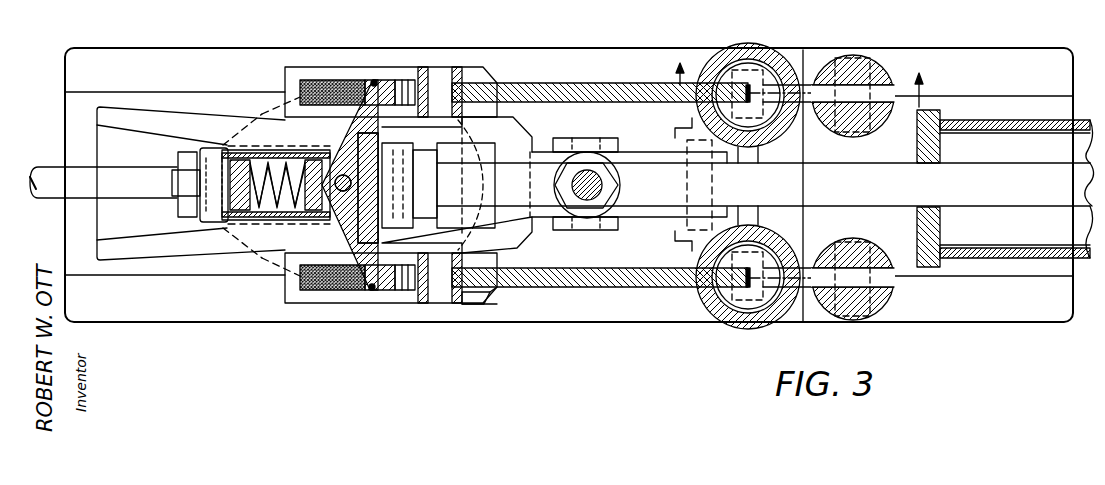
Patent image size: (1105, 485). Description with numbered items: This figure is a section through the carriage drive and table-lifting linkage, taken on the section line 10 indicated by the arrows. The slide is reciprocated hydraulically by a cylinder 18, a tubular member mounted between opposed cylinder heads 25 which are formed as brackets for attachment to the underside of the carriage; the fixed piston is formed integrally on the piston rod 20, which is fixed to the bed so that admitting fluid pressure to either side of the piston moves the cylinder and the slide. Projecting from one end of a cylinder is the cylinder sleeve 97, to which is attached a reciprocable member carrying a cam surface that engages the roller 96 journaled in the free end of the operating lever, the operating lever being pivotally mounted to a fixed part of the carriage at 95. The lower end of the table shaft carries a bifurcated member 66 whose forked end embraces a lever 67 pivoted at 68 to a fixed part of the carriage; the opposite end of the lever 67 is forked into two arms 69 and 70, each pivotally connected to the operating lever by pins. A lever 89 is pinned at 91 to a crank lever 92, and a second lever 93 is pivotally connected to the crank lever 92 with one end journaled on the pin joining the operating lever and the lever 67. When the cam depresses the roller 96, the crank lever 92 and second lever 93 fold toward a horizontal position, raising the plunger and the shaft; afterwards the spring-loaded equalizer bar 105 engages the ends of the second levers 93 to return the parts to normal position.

The section line 10 is at (790, 81).
The cylinder 18 is at (1025, 252).
The piston rod 20 is at (133, 152).
The cylinder head 25 is at (932, 268).
The bifurcated member 66 is at (608, 138).
The lever 67 is at (660, 220).
The pivot 68 is at (675, 138).
The arm 69 is at (517, 113).
The arm 70 is at (488, 297).
The lever 89 is at (620, 68).
The pin 91 is at (437, 77).
The crank lever 92 is at (468, 306).
The second lever 93 is at (388, 292).
The pivot 95 is at (428, 235).
The roller 96 is at (172, 184).
The cylinder sleeve 97 is at (895, 162).
The equalizer bar 105 is at (337, 222).